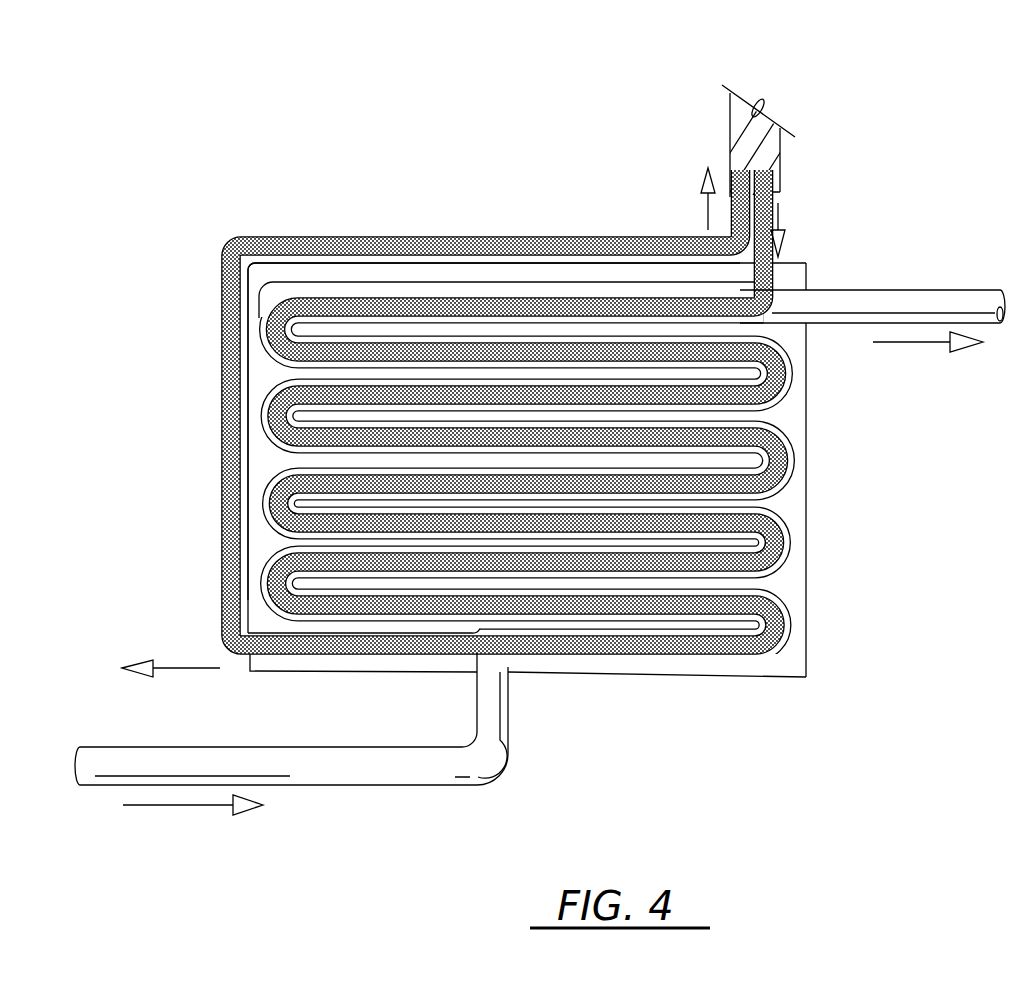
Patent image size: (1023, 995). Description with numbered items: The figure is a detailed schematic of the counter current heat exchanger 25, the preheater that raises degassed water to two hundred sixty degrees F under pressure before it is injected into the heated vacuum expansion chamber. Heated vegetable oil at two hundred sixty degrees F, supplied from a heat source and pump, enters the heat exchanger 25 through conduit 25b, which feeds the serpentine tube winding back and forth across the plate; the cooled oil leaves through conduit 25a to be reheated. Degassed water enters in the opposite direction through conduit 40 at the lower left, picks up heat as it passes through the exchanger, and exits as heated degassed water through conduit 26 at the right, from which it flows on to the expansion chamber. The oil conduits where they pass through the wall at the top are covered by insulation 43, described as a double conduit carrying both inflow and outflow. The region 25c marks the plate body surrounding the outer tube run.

The counter current heat exchanger 25 is at (810, 503).
The conduit 25a is at (530, 238).
The conduit 25b is at (362, 300).
The plate body 25c is at (268, 270).
The conduit 26 is at (938, 288).
The conduit 40 is at (167, 747).
The insulation 43 is at (780, 157).